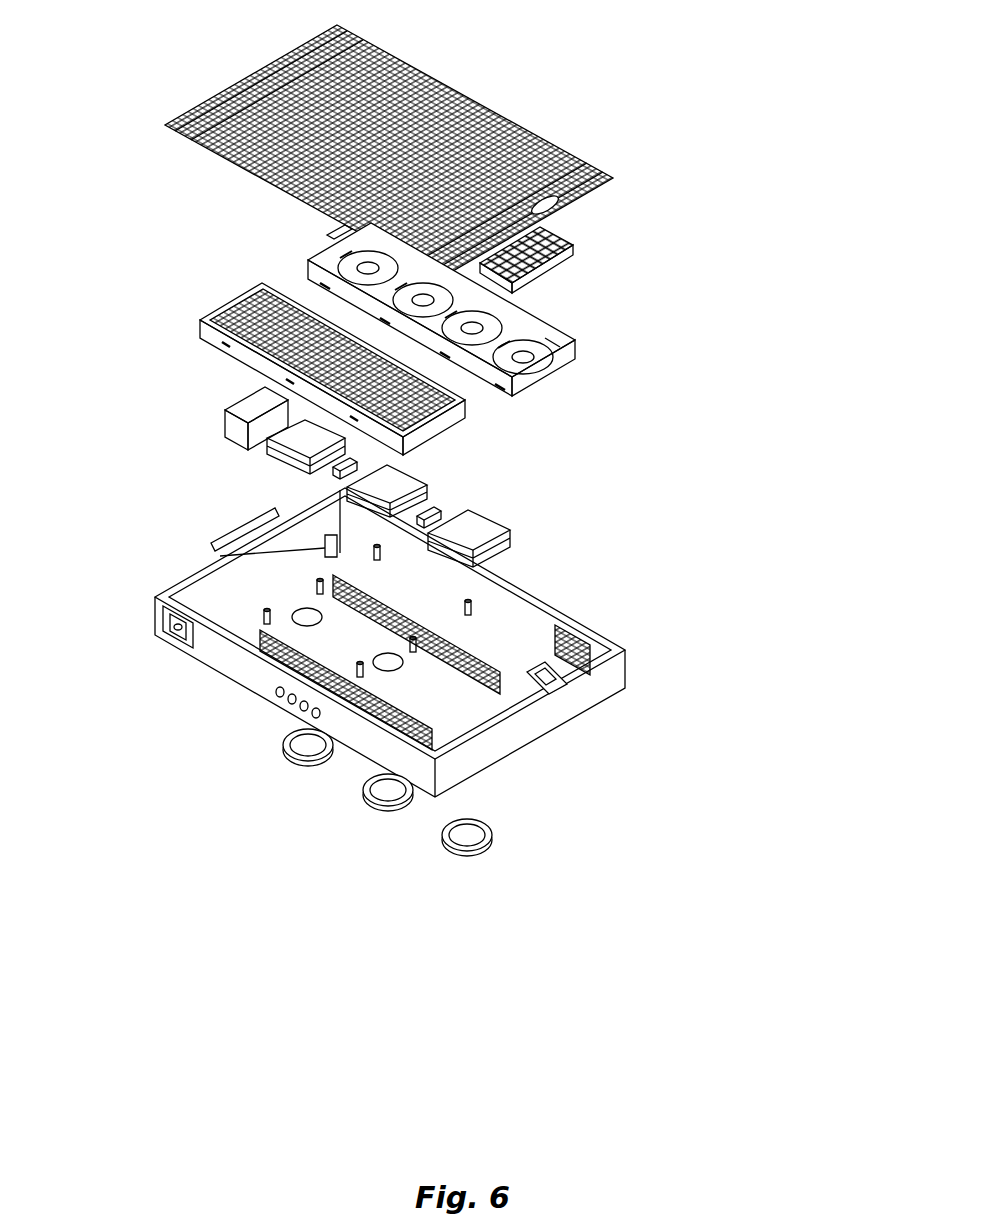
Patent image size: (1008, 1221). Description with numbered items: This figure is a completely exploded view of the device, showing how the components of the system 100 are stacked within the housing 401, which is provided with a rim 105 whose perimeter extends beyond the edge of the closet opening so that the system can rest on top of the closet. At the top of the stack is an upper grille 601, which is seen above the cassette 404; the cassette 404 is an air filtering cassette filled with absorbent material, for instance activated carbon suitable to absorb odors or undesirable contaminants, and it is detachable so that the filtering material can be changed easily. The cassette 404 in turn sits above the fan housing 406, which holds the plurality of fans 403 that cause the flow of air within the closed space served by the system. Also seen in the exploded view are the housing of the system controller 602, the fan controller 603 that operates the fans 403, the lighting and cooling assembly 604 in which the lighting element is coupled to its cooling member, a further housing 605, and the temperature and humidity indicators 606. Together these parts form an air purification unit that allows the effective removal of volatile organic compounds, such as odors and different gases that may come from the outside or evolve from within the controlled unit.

The system 100 is at (660, 618).
The rim 105 is at (225, 633).
The housing 401 is at (247, 677).
The fans 403 is at (577, 342).
The cassette 404 is at (575, 247).
The fan housing 406 is at (549, 323).
The upper grille 601 is at (517, 137).
The housing of the system controller 602 is at (240, 396).
The fan controller 603 is at (438, 508).
The lighting and cooling assembly 604 is at (487, 520).
The housing 605 is at (500, 823).
The temperature and humidity indicators 606 is at (337, 553).